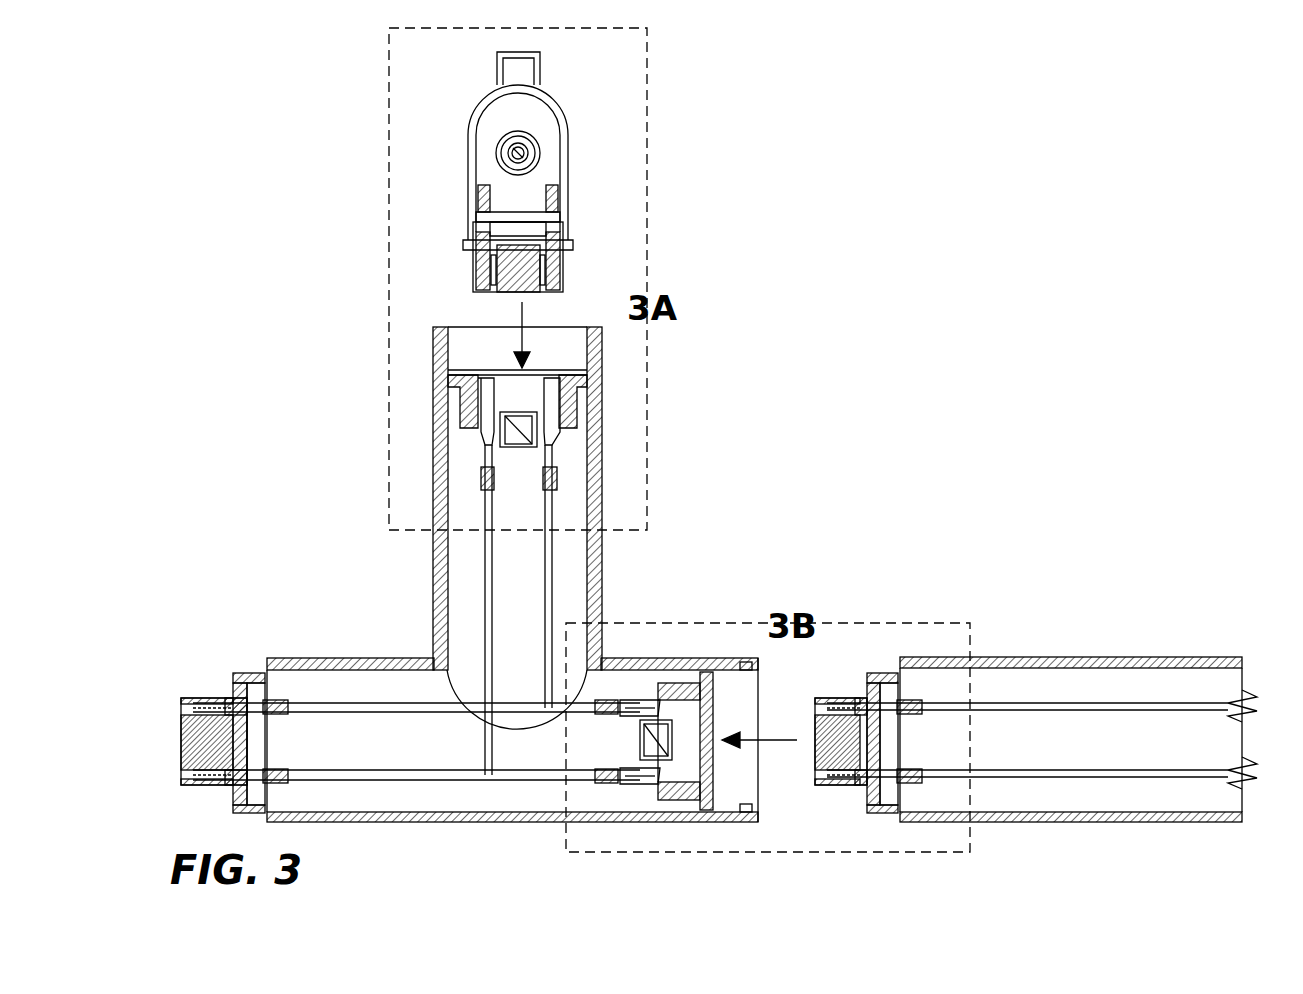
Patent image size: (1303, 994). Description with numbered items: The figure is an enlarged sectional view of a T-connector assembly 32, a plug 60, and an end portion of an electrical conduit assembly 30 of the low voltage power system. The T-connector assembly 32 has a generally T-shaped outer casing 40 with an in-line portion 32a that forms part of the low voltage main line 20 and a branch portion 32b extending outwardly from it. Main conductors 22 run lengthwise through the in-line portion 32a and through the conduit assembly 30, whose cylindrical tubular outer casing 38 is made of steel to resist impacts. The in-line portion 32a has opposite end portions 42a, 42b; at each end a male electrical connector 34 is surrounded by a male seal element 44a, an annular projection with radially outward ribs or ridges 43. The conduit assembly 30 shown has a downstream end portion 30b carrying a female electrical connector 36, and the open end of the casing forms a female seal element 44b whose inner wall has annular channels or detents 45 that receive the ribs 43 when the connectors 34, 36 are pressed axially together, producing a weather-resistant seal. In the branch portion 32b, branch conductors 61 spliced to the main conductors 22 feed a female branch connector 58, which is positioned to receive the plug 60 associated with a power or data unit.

The low voltage main line 20 is at (1087, 685).
The main conductors 22 is at (395, 713).
The electrical conduit assembly 30 is at (1047, 598).
The downstream end portion 30b is at (942, 840).
The T-connector assembly 32 is at (302, 518).
The in-line portion 32a is at (435, 823).
The branch portion 32b is at (605, 452).
The male electrical connector 34 is at (200, 698).
The female electrical connector 36 is at (748, 690).
The tubular outer casing 38 is at (1000, 655).
The T-shaped outer casing 40 is at (337, 655).
The downstream end portion of in-line portion 42a is at (730, 637).
The end portion of in-line portion 42b is at (270, 620).
The ribs or ridges 43 is at (250, 672).
The male seal element 44a is at (247, 673).
The female seal element 44b is at (758, 815).
The annular channels or detents 45 is at (752, 668).
The female branch connector 58 is at (540, 356).
The plug 60 is at (598, 118).
The branch conductors 61 is at (485, 650).